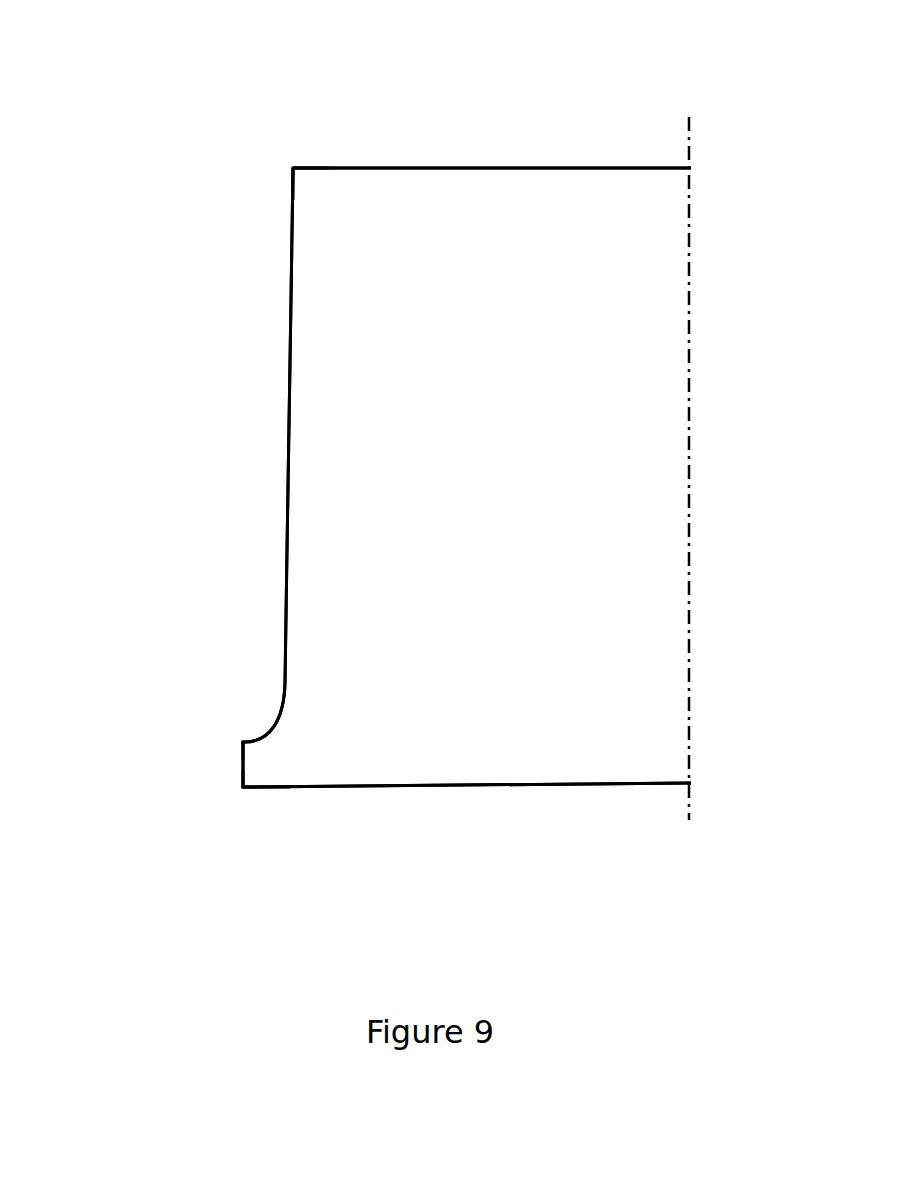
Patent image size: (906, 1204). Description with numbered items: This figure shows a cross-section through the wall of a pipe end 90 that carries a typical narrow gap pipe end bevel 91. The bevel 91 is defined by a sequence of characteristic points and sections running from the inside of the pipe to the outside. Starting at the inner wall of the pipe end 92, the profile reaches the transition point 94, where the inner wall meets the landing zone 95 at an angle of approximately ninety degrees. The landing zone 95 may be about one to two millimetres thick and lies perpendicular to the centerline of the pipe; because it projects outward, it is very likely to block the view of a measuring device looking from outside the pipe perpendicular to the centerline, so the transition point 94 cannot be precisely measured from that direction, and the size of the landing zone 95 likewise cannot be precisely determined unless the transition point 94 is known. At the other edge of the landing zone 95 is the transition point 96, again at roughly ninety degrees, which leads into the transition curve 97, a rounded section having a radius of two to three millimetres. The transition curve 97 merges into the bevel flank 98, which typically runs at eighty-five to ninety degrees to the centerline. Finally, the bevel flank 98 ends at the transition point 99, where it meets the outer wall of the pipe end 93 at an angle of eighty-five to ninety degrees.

The pipe end 90 is at (625, 243).
The pipe end bevel 91 is at (178, 257).
The inner wall of the pipe end 92 is at (592, 798).
The outer wall of the pipe end 93 is at (560, 160).
The transition point 94 is at (242, 792).
The landing zone 95 is at (230, 770).
The transition point 96 is at (240, 747).
The transition curve 97 is at (268, 717).
The bevel flank 98 is at (283, 452).
The transition point 99 is at (290, 162).